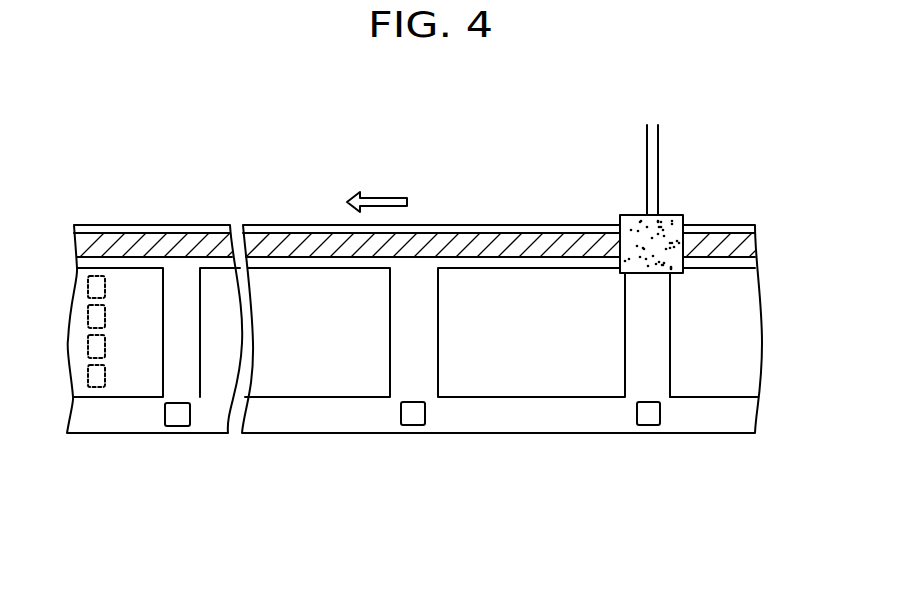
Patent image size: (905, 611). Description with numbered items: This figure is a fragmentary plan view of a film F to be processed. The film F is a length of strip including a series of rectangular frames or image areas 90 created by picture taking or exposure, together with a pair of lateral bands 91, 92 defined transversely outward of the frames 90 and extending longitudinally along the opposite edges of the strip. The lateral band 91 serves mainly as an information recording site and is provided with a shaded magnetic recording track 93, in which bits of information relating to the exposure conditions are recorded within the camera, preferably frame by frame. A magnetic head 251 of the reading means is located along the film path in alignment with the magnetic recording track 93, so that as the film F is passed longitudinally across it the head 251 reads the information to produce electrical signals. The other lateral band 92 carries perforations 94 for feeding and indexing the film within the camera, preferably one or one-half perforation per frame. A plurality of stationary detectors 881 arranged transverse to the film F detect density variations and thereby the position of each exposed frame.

The film F is at (708, 200).
The lateral band 91 is at (769, 224).
The lateral band 92 is at (769, 394).
The magnetic recording track 93 is at (477, 240).
The frames 90 is at (327, 385).
The perforations 94 is at (177, 418).
The stationary detectors 881 is at (92, 397).
The magnetic head 251 is at (635, 228).